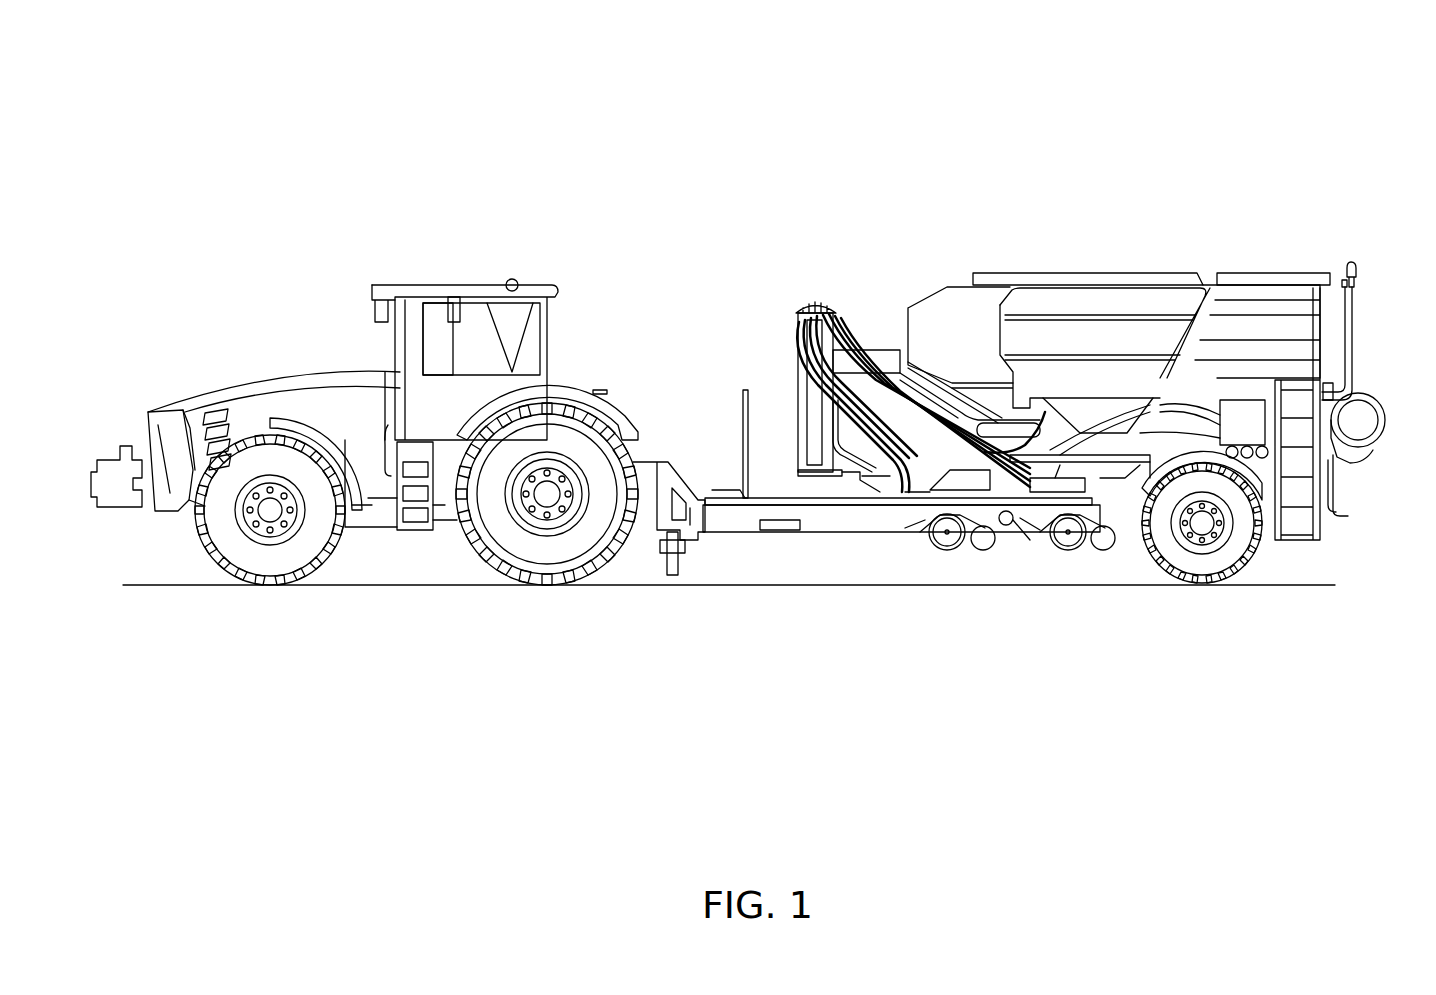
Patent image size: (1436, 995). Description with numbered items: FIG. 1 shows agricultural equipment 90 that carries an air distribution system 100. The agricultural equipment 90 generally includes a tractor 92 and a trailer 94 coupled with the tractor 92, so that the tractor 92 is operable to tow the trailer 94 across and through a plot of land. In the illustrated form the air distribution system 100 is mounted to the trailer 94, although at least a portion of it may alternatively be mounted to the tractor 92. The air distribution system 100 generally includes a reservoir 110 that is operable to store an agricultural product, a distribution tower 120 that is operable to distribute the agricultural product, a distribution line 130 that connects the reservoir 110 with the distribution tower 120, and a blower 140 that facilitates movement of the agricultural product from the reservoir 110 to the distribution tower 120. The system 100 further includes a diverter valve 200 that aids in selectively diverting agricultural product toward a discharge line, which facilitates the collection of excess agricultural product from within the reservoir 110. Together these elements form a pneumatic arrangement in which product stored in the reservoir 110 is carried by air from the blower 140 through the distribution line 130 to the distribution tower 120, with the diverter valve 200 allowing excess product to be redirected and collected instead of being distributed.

The agricultural equipment 90 is at (483, 126).
The tractor 92 is at (250, 280).
The trailer 94 is at (697, 283).
The air distribution system 100 is at (988, 180).
The reservoir 110 is at (1120, 270).
The distribution tower 120 is at (838, 275).
The distribution line 130 is at (1180, 405).
The blower 140 is at (1378, 393).
The diverter valve 200 is at (777, 365).